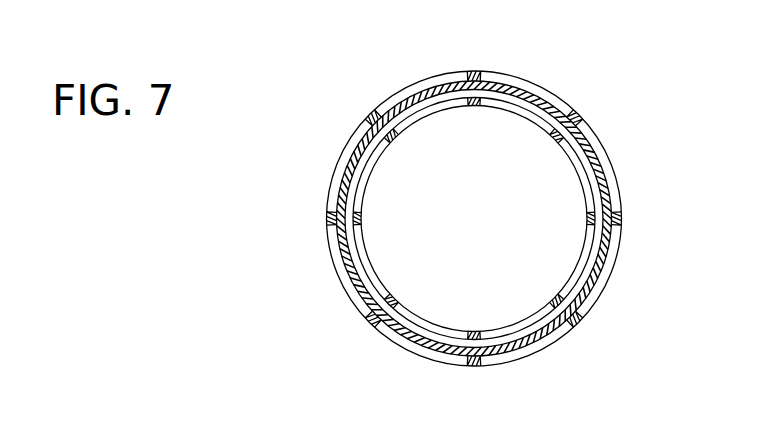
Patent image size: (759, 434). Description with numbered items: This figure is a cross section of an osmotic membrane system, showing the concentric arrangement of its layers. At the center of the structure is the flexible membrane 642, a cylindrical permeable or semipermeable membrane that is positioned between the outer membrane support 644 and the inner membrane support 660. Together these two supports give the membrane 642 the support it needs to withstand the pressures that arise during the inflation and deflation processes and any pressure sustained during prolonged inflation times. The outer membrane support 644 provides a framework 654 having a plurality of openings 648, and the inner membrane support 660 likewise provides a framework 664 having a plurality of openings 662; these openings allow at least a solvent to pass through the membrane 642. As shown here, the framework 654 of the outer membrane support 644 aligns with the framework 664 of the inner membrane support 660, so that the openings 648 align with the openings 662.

The flexible membrane 642 is at (597, 173).
The outer membrane support 644 is at (582, 113).
The openings of outer membrane support 648 is at (329, 200).
The framework of outer membrane support 654 is at (480, 69).
The inner membrane support 660 is at (588, 267).
The openings of inner membrane support 662 is at (413, 312).
The framework of inner membrane support 664 is at (392, 133).